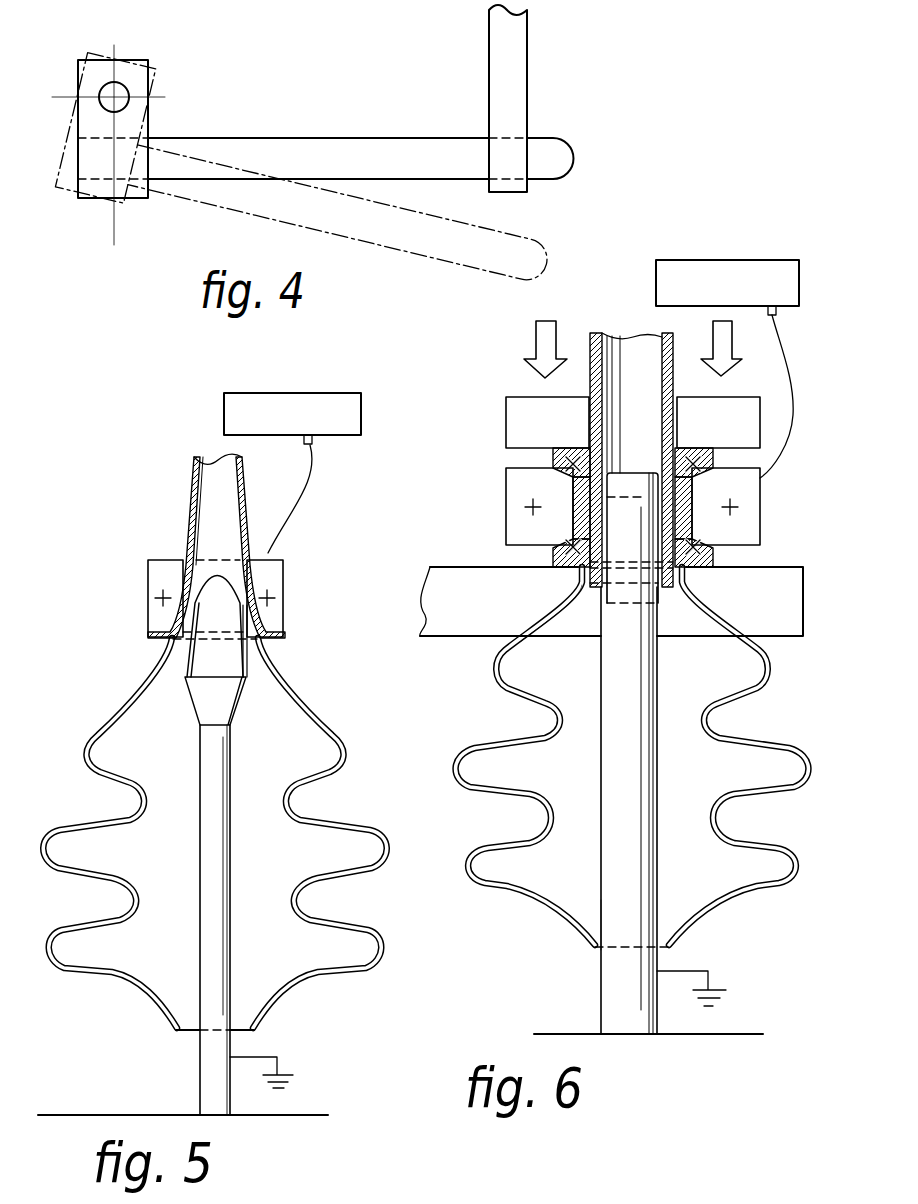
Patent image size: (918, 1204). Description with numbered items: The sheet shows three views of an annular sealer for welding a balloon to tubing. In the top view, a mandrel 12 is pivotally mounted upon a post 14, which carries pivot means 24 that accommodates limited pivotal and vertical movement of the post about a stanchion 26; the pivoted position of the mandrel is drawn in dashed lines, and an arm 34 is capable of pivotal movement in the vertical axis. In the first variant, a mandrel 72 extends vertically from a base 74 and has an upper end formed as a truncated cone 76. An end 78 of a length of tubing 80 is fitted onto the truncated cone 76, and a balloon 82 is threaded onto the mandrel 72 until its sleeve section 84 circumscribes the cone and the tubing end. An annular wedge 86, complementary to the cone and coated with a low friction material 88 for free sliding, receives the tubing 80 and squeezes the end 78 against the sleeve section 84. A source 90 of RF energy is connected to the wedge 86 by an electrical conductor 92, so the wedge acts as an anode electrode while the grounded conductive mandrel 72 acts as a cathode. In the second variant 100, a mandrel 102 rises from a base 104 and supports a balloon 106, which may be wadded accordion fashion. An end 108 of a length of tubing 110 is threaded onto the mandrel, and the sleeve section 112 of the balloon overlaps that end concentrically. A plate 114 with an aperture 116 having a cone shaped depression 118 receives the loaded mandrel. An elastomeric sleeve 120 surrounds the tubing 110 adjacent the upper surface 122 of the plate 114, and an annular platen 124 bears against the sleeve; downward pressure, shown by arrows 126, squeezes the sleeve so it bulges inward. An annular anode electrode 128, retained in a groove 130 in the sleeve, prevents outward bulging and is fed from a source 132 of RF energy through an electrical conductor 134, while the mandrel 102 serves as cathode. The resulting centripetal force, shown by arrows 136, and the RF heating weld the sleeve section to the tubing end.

In FIG. 4, the mandrel 12 is at (556, 137).
In FIG. 4, the post 14 is at (147, 118).
In FIG. 4, the pivot means 24 is at (128, 88).
In FIG. 4, the stanchion 26 is at (113, 82).
In FIG. 4, the arm 34 is at (527, 70).
In FIG. 5, the mandrel 72 is at (198, 1070).
In FIG. 5, the base 74 is at (62, 1115).
In FIG. 5, the truncated cone 76 is at (257, 660).
In FIG. 5, the end of tubing 78 is at (245, 610).
In FIG. 5, the tubing 80 is at (195, 477).
In FIG. 5, the balloon 82 is at (386, 848).
In FIG. 5, the sleeve section 84 is at (260, 657).
In FIG. 5, the annular wedge 86 is at (275, 572).
In FIG. 5, the low friction material 88 is at (186, 560).
In FIG. 5, the source of RF energy 90 is at (361, 412).
In FIG. 5, the electrical conductor 92 is at (312, 473).
In FIG. 6, the variant 100 is at (526, 940).
In FIG. 6, the mandrel 102 is at (599, 990).
In FIG. 6, the base 104 is at (748, 1032).
In FIG. 6, the balloon 106 is at (744, 796).
In FIG. 6, the end of tubing 108 is at (663, 593).
In FIG. 6, the tubing 110 is at (598, 342).
In FIG. 6, the sleeve section 112 is at (675, 580).
In FIG. 6, the plate 114 is at (791, 640).
In FIG. 6, the aperture 116 is at (578, 573).
In FIG. 6, the cone shaped depression 118 is at (540, 617).
In FIG. 6, the elastomeric sleeve 120 is at (553, 457).
In FIG. 6, the upper surface 122 is at (460, 567).
In FIG. 6, the annular platen 124 is at (507, 410).
In FIG. 6, the arrows 126 is at (536, 336).
In FIG. 6, the annular anode electrode 128 is at (760, 532).
In FIG. 6, the groove 130 is at (760, 478).
In FIG. 6, the source of RF energy 132 is at (758, 260).
In FIG. 6, the electrical conductor 134 is at (790, 379).
In FIG. 6, the arrows 136 is at (570, 543).